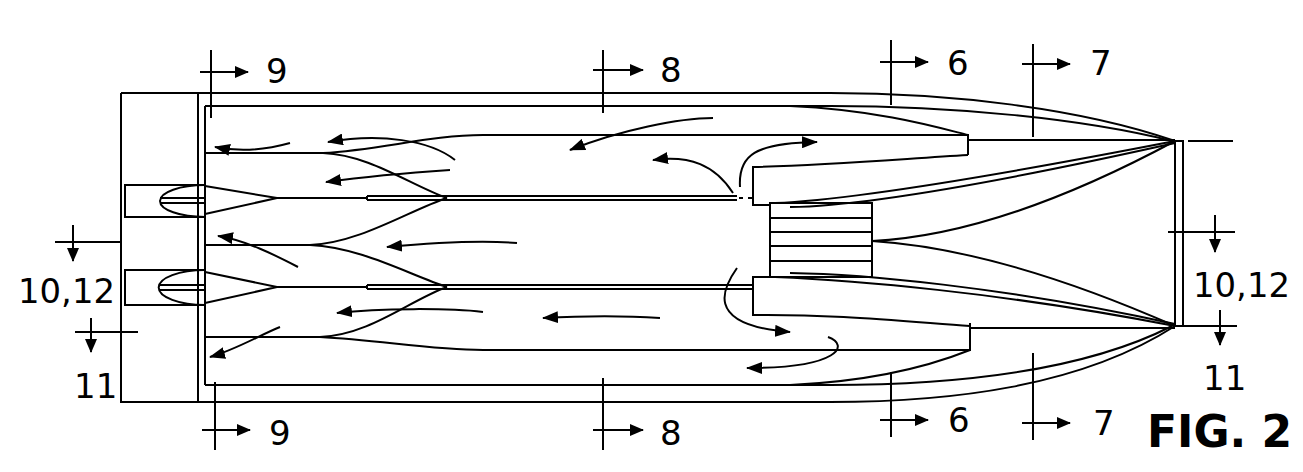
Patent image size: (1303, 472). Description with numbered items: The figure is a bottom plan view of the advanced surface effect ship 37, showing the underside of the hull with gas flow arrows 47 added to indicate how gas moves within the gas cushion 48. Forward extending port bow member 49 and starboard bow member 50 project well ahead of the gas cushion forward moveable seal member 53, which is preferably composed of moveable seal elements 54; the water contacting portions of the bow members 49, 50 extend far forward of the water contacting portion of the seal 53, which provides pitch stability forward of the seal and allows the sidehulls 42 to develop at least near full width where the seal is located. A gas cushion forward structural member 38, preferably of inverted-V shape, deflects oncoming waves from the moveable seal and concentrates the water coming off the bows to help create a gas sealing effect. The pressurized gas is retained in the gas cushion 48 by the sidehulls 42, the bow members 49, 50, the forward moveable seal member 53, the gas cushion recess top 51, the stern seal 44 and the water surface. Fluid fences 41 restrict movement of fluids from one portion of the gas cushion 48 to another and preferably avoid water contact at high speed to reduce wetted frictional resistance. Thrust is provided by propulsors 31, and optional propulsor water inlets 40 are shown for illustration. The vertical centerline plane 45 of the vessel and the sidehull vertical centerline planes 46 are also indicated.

The propulsor 31 is at (158, 212).
The advanced surface effect ship 37 is at (1145, 227).
The gas cushion forward structural member 38 is at (965, 224).
The propulsor water inlet 40 is at (213, 187).
The fluid fence 41 is at (582, 197).
The sidehull 42 is at (470, 93).
The stern seal 44 is at (345, 232).
The vertical centerline plane 45 is at (1192, 230).
The sidehull vertical centerline plane 46 is at (1203, 141).
The gas flow arrow 47 is at (693, 120).
The gas cushion 48 is at (598, 236).
The port bow member 49 is at (1016, 324).
The starboard bow member 50 is at (1016, 138).
The gas cushion recess top 51 is at (535, 179).
The gas cushion forward moveable seal member 53 is at (770, 225).
The moveable seal element 54 is at (770, 250).